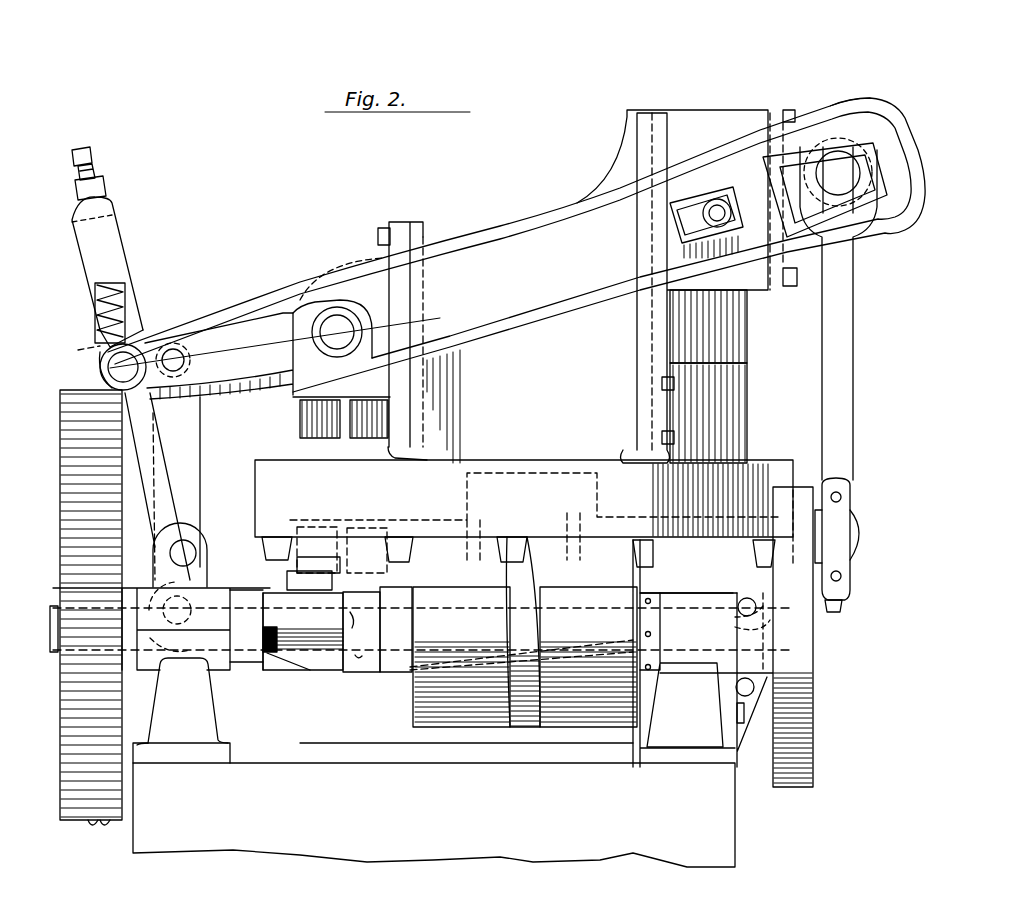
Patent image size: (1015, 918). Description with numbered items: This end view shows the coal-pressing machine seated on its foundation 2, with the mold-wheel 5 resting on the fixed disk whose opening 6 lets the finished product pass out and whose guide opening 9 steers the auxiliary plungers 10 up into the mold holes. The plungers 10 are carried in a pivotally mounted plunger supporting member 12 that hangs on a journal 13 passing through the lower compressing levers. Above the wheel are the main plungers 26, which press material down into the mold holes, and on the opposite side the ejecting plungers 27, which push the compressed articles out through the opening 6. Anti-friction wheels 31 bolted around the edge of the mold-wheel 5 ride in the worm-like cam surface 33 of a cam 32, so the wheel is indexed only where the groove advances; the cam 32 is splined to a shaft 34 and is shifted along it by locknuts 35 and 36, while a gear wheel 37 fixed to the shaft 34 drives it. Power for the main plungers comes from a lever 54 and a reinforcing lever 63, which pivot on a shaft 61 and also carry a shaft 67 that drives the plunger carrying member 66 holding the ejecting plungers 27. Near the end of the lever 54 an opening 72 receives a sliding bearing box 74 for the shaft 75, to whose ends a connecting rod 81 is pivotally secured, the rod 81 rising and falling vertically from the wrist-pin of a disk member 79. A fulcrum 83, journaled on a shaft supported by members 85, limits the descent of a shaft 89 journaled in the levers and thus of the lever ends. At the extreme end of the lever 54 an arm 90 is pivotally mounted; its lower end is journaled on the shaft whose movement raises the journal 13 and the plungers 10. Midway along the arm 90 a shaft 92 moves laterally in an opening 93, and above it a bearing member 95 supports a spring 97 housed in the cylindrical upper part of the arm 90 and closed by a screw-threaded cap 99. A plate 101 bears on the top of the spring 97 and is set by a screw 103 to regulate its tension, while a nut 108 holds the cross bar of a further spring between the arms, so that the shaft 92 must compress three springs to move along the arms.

The foundation 2 is at (722, 817).
The mold-wheel 5 is at (735, 465).
The opening 6 is at (586, 286).
The opening 9 is at (392, 612).
The auxiliary plungers 10 is at (297, 560).
The plunger supporting member 12 is at (309, 581).
The journal 13 is at (320, 672).
The main plungers 26 is at (357, 438).
The ejecting plungers 27 is at (750, 344).
The anti-friction wheels 31 is at (267, 543).
The cam 32 is at (494, 722).
The cam surface 33 is at (523, 643).
The shaft 34 is at (50, 631).
The locknut 35 is at (645, 672).
The locknut 36 is at (373, 674).
The gear wheel 37 is at (122, 437).
The lever 54 is at (278, 282).
The shaft 61 is at (362, 328).
The reinforcing lever 63 is at (226, 348).
The plunger carrying member 66 is at (760, 282).
The shaft 67 is at (358, 282).
The openings 72 is at (867, 141).
The bearing box 74 is at (868, 118).
The shaft 75 is at (843, 175).
The disk member 79 is at (815, 705).
The connecting rod 81 is at (838, 410).
The fulcrum 83 is at (192, 486).
The members 85 is at (200, 565).
The shaft 89 is at (190, 360).
The arm 90 is at (158, 484).
The shaft 92 is at (112, 380).
The opening 93 is at (78, 350).
The bearing member 95 is at (110, 363).
The spring 97 is at (95, 312).
The cap 99 is at (82, 214).
The plate 101 is at (74, 213).
The screw 103 is at (94, 170).
The nut 108 is at (104, 190).